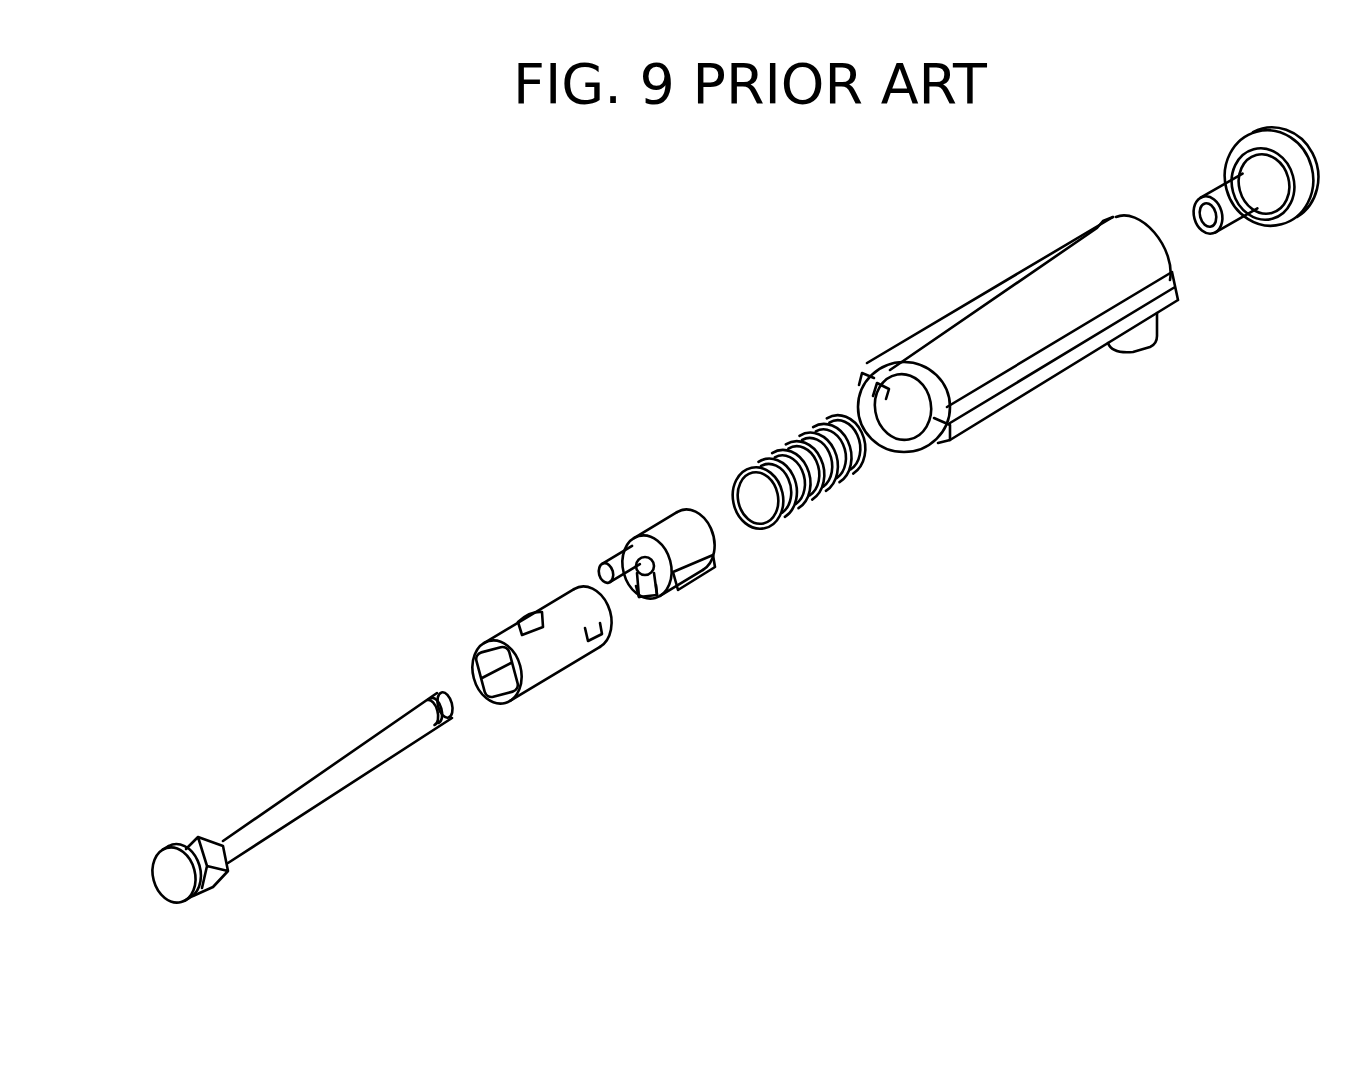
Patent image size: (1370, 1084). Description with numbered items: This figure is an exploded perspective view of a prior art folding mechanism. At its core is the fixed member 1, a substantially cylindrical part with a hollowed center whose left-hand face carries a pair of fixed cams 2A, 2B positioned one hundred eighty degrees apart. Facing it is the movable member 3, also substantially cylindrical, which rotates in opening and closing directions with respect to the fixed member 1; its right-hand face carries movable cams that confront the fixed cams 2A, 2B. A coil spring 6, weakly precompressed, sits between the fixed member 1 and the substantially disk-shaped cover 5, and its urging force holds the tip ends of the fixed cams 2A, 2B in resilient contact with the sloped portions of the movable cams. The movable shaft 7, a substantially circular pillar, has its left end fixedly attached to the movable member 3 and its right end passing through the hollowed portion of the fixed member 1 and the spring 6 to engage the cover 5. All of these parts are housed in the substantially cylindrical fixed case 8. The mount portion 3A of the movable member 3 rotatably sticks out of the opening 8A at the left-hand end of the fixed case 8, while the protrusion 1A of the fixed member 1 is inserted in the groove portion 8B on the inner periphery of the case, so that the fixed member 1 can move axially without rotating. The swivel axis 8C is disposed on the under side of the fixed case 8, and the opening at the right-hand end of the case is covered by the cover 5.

The fixed member 1 is at (672, 530).
The protrusion 1A is at (707, 578).
The fixed cam 2A is at (610, 555).
The fixed cam 2B is at (660, 596).
The movable member 3 is at (563, 647).
The mount portion 3A is at (510, 637).
The cover 5 is at (1292, 225).
The coil spring 6 is at (828, 497).
The movable shaft 7 is at (335, 793).
The fixed case 8 is at (1021, 339).
The opening 8A is at (905, 397).
The groove portion 8B is at (947, 438).
The swivel axis 8C is at (1152, 352).